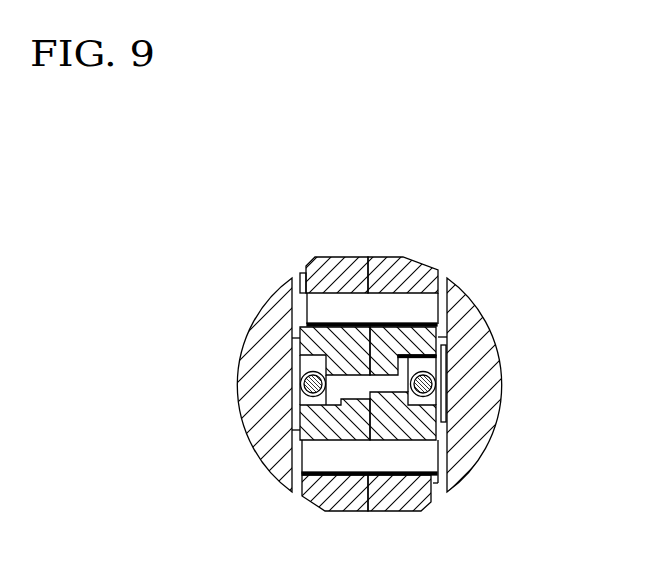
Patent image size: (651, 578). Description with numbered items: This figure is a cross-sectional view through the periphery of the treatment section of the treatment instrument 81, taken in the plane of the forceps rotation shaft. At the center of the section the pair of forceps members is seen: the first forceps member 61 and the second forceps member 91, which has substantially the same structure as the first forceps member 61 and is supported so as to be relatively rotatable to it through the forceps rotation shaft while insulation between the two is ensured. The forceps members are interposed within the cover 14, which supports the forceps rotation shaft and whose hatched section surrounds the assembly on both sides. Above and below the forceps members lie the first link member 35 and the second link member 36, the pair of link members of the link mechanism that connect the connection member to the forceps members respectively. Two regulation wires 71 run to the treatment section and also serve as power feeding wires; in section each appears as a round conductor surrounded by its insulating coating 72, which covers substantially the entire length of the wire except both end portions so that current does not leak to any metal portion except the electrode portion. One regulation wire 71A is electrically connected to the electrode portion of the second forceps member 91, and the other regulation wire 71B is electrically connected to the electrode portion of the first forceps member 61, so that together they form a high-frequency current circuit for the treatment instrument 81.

The treatment instrument 81 is at (519, 181).
The cover 14 is at (267, 433).
The first link member 35 is at (330, 270).
The first forceps member 61 is at (420, 267).
The regulation wire 71 is at (371, 379).
The regulation wire 71A is at (308, 378).
The regulation wire 71B is at (433, 379).
The insulating coating 72 is at (305, 388).
The second forceps member 91 is at (345, 494).
The second link member 36 is at (408, 494).